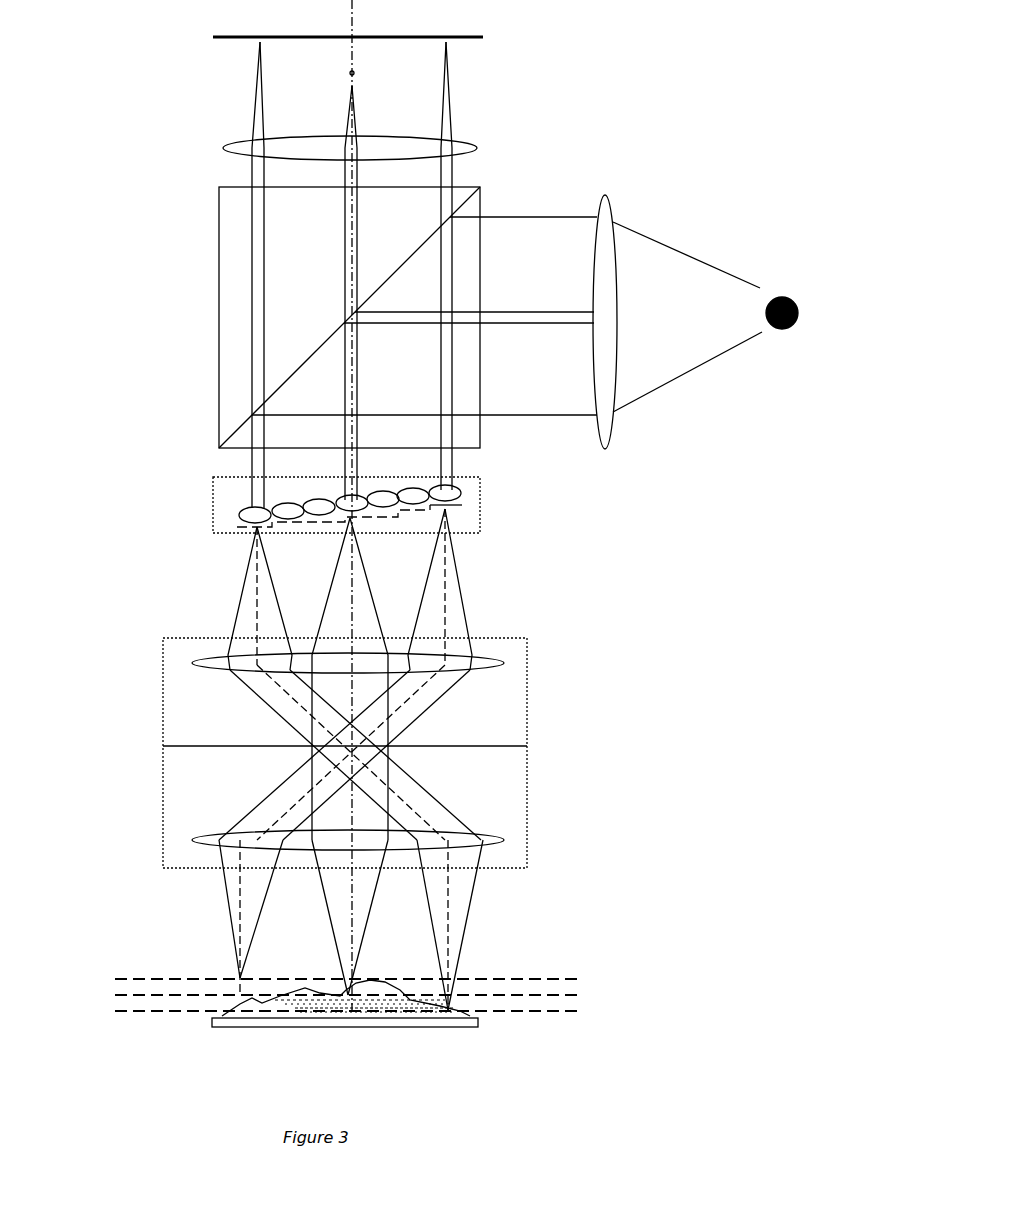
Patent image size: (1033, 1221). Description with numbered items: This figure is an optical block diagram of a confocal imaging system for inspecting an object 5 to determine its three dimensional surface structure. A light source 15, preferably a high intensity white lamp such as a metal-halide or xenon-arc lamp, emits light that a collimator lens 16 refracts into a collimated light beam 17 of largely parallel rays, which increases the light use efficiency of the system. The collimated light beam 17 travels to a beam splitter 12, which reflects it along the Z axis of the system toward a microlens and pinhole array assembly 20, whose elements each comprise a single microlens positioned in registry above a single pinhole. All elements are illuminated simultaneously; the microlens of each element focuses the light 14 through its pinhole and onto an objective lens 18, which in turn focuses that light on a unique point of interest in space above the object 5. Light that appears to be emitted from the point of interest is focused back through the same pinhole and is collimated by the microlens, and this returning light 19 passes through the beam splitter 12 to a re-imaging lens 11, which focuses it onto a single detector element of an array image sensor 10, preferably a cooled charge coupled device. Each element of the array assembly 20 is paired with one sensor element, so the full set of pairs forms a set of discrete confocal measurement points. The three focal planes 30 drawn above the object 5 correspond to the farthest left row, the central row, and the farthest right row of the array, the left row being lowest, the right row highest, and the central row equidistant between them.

The object 5 is at (442, 1028).
The array image sensor 10 is at (451, 28).
The re-imaging lens 11 is at (441, 135).
The beam splitter 12 is at (250, 317).
The light beams from pinhole array 14 is at (442, 589).
The light source 15 is at (705, 297).
The collimator lens 16 is at (688, 340).
The collimated light beam 17 is at (488, 391).
The objective lens 18 is at (439, 753).
The reflected imaging rays 19 is at (287, 275).
The microlens and pinhole array assembly 20 is at (265, 494).
The focal plane 30 is at (421, 939).